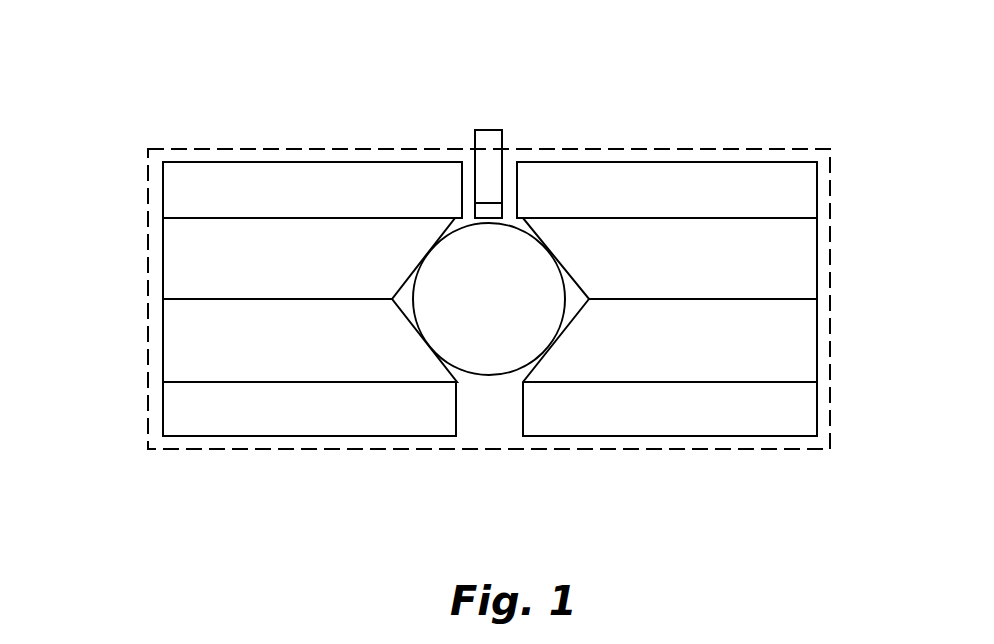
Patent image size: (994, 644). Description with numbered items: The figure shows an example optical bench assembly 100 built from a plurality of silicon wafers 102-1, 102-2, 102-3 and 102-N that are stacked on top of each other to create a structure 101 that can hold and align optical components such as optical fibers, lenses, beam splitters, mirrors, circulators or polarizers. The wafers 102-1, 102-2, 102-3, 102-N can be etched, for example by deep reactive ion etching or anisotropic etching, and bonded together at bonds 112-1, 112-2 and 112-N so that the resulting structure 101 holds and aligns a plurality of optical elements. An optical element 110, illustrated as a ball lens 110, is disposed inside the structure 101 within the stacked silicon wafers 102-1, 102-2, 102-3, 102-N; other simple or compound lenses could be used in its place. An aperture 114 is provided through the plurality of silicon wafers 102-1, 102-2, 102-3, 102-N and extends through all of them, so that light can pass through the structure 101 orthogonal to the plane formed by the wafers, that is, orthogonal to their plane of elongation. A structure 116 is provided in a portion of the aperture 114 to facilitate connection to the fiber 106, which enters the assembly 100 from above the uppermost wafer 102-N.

The assembly 100 is at (749, 67).
The structure 101 is at (300, 148).
The silicon wafer 102-N is at (163, 183).
The silicon wafer 102-3 is at (163, 265).
The silicon wafer 102-2 is at (163, 347).
The silicon wafer 102-1 is at (163, 413).
The bond 112-N is at (817, 218).
The bond 112-2 is at (817, 299).
The bond 112-1 is at (817, 381).
The fiber 106 is at (488, 131).
The optical element 110 is at (457, 353).
The aperture 114 is at (496, 410).
The structure 116 is at (466, 153).